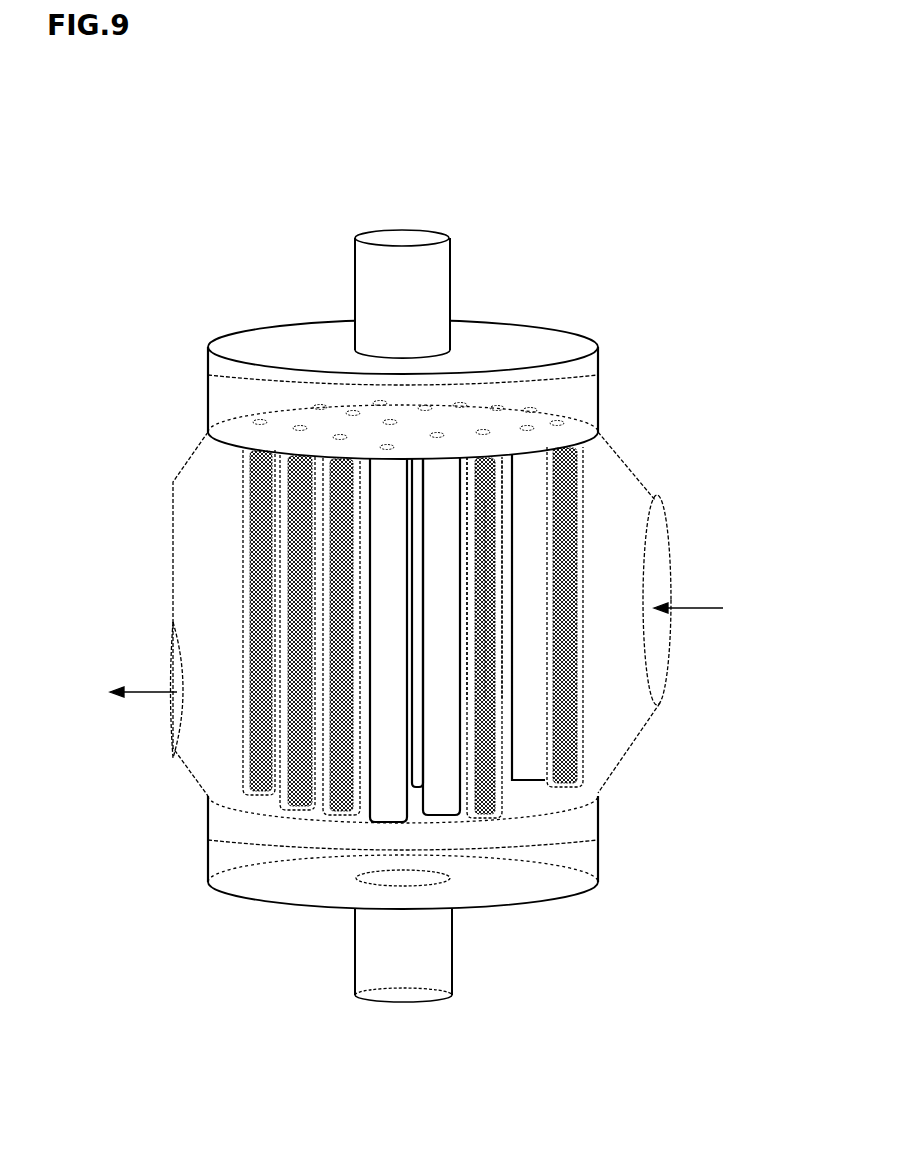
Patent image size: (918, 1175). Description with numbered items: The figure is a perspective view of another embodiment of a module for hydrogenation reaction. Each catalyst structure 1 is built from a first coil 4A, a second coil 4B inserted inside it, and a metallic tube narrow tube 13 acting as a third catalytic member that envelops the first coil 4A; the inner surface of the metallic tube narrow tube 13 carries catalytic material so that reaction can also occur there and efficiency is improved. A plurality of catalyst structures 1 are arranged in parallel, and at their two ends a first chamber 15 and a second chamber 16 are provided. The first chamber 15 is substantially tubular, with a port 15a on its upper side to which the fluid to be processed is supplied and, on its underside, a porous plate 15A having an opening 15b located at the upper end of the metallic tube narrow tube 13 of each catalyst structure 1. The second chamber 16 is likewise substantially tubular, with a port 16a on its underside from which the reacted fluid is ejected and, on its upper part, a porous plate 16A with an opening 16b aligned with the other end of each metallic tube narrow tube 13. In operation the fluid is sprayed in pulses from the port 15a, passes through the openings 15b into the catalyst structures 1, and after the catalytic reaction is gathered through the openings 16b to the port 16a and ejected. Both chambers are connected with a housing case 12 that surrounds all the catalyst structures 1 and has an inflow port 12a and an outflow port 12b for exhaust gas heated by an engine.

The catalyst structure 1 is at (240, 610).
The first coil 4A is at (480, 485).
The second coil 4B is at (490, 655).
The metallic tube narrow tube 13 is at (505, 533).
The housing case 12 is at (208, 547).
The inflow port 12a is at (670, 652).
The outflow port 12b is at (173, 665).
The first chamber 15 is at (203, 366).
The port 15a is at (398, 233).
The porous plate 15A is at (240, 423).
The opening 15b is at (545, 405).
The second chamber 16 is at (198, 861).
The port 16a is at (400, 997).
The porous plate 16A is at (562, 842).
The opening 16b is at (519, 807).